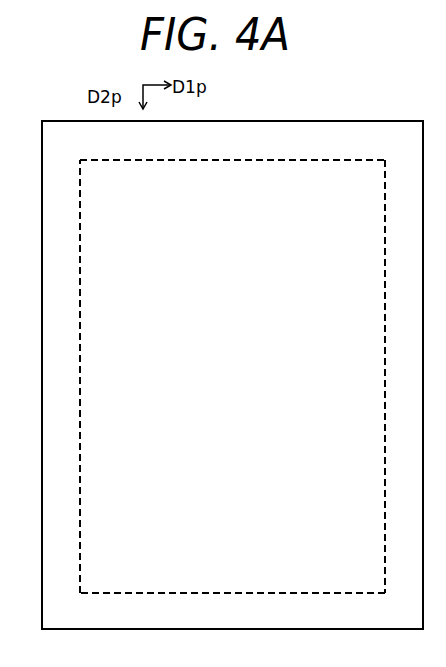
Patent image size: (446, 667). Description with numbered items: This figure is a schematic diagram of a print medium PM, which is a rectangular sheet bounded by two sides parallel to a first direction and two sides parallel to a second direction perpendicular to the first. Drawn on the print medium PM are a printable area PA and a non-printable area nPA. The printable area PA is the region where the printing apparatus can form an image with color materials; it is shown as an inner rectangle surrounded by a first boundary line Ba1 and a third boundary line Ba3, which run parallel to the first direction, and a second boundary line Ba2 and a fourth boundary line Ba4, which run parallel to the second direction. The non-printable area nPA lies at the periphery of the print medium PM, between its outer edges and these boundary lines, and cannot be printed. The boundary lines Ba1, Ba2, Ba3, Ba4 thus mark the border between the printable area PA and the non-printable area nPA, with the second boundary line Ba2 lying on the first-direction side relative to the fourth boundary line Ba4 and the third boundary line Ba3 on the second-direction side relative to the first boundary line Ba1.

The print medium PM is at (360, 121).
The printable area PA is at (347, 173).
The non-printable area nPA is at (245, 132).
The first boundary line Ba1 is at (247, 160).
The second boundary line Ba2 is at (385, 325).
The third boundary line Ba3 is at (243, 592).
The fourth boundary line Ba4 is at (82, 325).